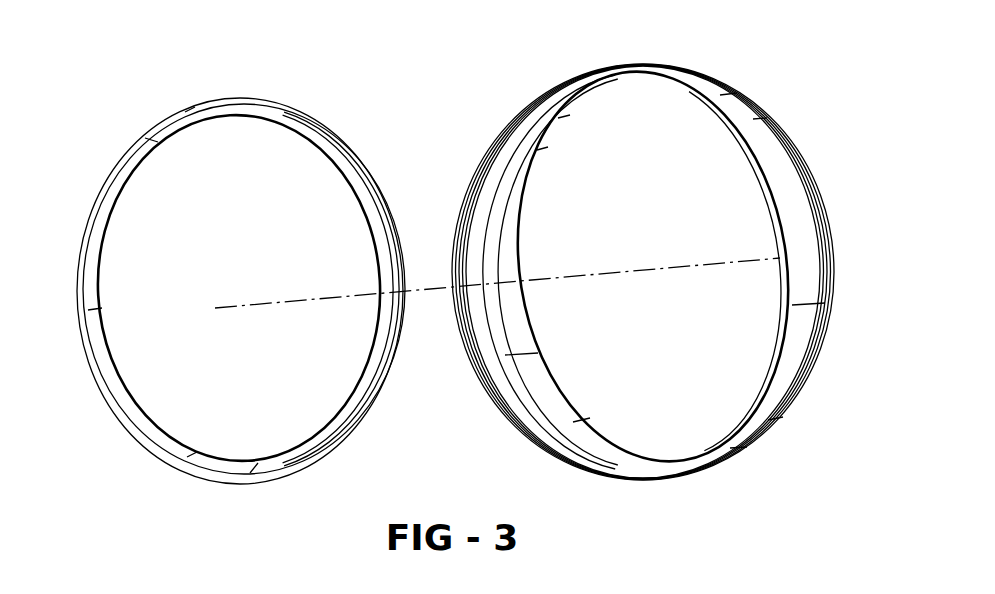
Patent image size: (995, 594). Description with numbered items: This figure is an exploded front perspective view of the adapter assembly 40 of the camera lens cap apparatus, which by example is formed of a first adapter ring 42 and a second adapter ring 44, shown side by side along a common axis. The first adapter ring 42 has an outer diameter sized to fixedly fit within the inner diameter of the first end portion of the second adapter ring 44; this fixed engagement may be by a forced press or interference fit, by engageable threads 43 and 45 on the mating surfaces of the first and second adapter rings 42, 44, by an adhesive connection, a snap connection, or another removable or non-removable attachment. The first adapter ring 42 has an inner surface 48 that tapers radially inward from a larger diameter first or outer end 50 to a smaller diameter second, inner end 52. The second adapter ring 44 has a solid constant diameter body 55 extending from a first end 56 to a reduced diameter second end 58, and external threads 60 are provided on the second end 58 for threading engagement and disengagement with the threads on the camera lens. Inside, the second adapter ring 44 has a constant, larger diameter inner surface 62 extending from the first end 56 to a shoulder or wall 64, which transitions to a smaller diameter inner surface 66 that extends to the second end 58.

The adapter assembly 40 is at (733, 48).
The first adapter ring 42 is at (130, 128).
The threads 43 is at (362, 172).
The second adapter ring 44 is at (848, 264).
The threads 45 is at (466, 223).
The inner surface 48 is at (110, 197).
The first or outer end 50 is at (80, 246).
The second, inner end 52 is at (104, 288).
The body 55 is at (793, 370).
The first end 56 is at (680, 468).
The second end 58 is at (768, 100).
The external threads 60 is at (797, 147).
The inner surface 62 is at (518, 415).
The shoulder or wall 64 is at (508, 355).
The inner surface 66 is at (506, 255).